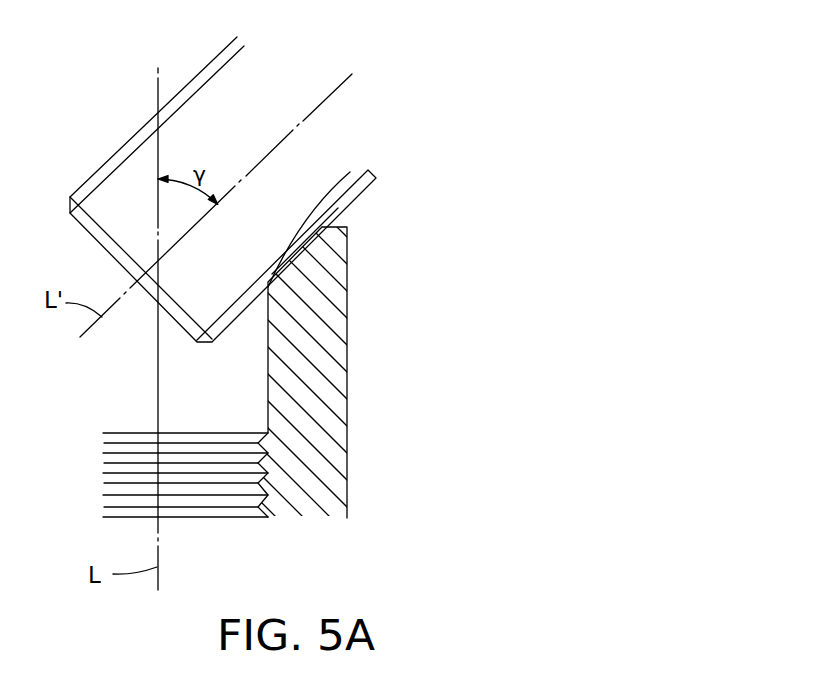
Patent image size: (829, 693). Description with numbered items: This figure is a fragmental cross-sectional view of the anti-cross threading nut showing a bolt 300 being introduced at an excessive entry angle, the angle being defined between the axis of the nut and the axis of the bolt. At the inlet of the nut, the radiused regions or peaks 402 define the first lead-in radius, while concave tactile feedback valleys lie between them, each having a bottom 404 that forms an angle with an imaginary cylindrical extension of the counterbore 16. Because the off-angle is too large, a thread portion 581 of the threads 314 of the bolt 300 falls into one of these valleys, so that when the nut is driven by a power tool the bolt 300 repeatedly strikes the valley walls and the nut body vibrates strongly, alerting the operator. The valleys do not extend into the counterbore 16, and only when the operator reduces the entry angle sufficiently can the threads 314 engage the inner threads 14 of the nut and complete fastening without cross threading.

The bolt 300 is at (321, 118).
The threads 314 is at (356, 182).
The radiused regions or peaks 402 is at (294, 238).
The bottom of tactile feedback features 404 is at (313, 254).
The thread portion 581 is at (312, 194).
The counterbore 16 is at (250, 383).
The inner threads 14 is at (233, 500).